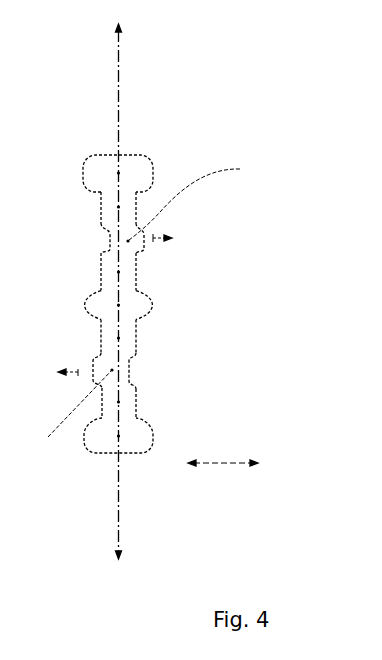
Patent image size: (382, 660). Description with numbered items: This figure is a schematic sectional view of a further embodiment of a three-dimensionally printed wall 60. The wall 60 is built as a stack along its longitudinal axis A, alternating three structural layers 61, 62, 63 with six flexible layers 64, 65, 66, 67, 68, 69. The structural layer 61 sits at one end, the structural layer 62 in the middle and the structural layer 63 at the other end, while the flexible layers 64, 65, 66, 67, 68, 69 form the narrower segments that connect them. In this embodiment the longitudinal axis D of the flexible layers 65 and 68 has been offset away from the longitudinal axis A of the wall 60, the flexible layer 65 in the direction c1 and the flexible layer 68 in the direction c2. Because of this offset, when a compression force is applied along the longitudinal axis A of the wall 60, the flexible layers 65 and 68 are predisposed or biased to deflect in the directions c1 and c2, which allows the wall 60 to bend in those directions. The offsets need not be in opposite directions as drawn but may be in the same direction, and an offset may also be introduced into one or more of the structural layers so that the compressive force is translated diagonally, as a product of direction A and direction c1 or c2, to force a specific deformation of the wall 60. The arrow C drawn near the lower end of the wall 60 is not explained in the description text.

The wall 60 is at (178, 291).
The structural layer 61 is at (133, 170).
The structural layer 62 is at (98, 305).
The structural layer 63 is at (146, 431).
The flexible layer 64 is at (101, 210).
The flexible layer 65 is at (109, 244).
The flexible layer 66 is at (140, 280).
The flexible layer 67 is at (136, 341).
The flexible layer 68 is at (130, 368).
The flexible layer 69 is at (136, 398).
The longitudinal axis of the wall A is at (118, 80).
The longitudinal axis of flexible layers D is at (144, 305).
The direction c1 is at (158, 233).
The direction c2 is at (76, 380).
The direction of displacement C is at (210, 465).